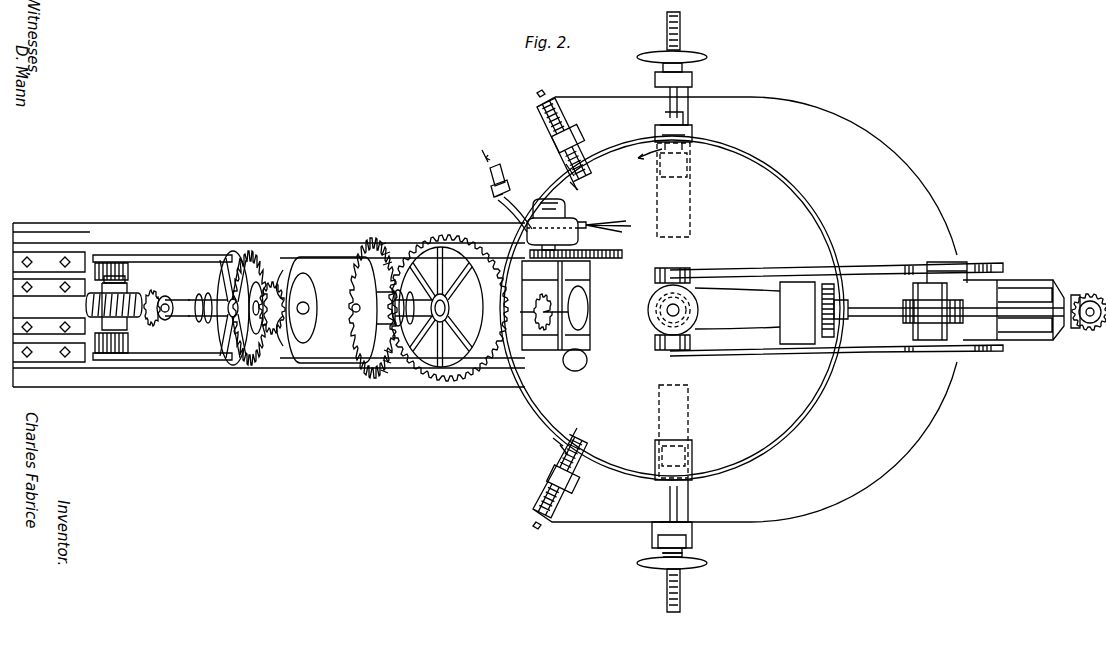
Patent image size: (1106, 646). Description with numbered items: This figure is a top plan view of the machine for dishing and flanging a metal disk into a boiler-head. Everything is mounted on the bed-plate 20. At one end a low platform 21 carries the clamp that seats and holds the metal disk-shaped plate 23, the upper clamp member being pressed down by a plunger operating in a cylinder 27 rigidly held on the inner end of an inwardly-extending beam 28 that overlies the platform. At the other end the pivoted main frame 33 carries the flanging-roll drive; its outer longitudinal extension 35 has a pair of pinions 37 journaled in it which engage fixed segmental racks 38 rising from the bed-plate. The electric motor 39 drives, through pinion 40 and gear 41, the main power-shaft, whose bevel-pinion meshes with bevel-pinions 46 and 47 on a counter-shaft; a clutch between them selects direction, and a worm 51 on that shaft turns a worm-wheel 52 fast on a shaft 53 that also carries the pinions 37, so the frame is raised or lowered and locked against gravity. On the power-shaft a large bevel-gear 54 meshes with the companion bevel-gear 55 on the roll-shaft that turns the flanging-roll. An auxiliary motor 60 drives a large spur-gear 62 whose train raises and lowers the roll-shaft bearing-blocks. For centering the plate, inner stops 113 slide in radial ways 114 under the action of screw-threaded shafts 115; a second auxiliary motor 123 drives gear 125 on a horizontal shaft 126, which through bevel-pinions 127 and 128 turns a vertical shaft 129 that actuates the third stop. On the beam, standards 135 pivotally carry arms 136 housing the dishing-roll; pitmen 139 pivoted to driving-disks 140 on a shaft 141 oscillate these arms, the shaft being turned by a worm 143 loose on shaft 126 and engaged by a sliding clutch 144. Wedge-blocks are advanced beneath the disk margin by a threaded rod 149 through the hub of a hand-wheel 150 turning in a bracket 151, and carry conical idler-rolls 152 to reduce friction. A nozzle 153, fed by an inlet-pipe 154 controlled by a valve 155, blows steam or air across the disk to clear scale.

The bed-plate 20 is at (356, 378).
The low platform 21 is at (797, 521).
The metal disk-shaped plate 23 is at (672, 308).
The cylinder 27 is at (690, 288).
The inwardly-extending beam 28 is at (737, 308).
The pivoted main frame 33 is at (286, 372).
The outer longitudinal extension 35 is at (190, 362).
The pinions 37 is at (120, 356).
The fixed segmental racks 38 is at (86, 365).
The electric motor 39 is at (327, 310).
The pinion 40 is at (270, 283).
The gear 41 is at (235, 255).
The bevel-pinion 46 is at (166, 296).
The bevel-pinion 47 is at (154, 290).
The worm 51 is at (138, 298).
The worm-wheel 52 is at (86, 305).
The shaft 53 is at (127, 322).
The large bevel-gear 54 is at (382, 376).
The companion bevel-gear 55 is at (479, 368).
The auxiliary motor 60 is at (552, 224).
The large spur-gear 62 is at (614, 254).
The inner stops 113 is at (574, 134).
The ways 114 is at (577, 168).
The screw-threaded shafts 115 is at (572, 180).
The second auxiliary motor 123 is at (792, 292).
The gear 125 is at (831, 283).
The horizontal shaft 126 is at (850, 300).
The bevel-pinion 127 is at (1074, 296).
The bevel-pinion 128 is at (1092, 330).
The vertical shaft 129 is at (1068, 332).
The standards 135 is at (648, 302).
The arms 136 is at (655, 277).
The pitmen 139 is at (768, 266).
The driving-disks 140 is at (915, 265).
The shaft 141 is at (945, 290).
The worm 143 is at (965, 302).
The sliding clutch 144 is at (916, 330).
The threaded rod 149 is at (652, 536).
The hand-wheel 150 is at (708, 566).
The bracket 151 is at (690, 543).
The conical idler-rolls 152 is at (680, 130).
The nozzle 153 is at (590, 223).
The inlet-pipe 154 is at (507, 210).
The valve 155 is at (490, 189).